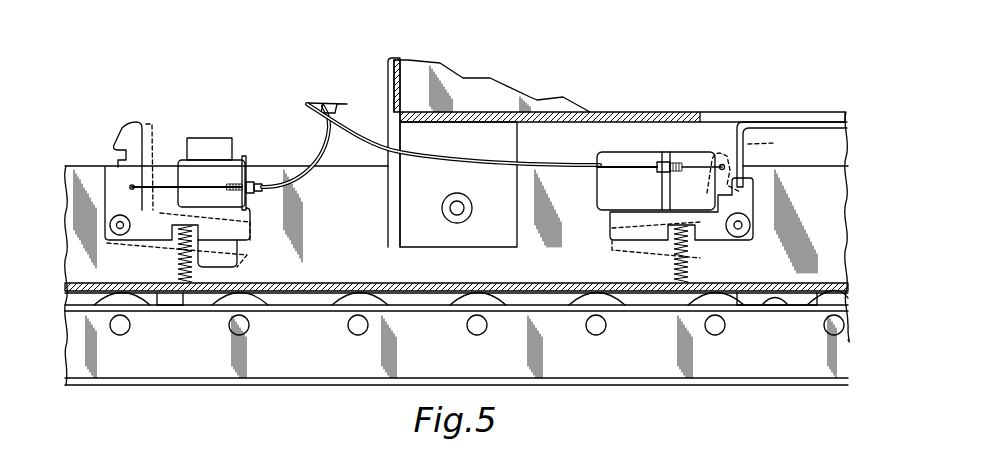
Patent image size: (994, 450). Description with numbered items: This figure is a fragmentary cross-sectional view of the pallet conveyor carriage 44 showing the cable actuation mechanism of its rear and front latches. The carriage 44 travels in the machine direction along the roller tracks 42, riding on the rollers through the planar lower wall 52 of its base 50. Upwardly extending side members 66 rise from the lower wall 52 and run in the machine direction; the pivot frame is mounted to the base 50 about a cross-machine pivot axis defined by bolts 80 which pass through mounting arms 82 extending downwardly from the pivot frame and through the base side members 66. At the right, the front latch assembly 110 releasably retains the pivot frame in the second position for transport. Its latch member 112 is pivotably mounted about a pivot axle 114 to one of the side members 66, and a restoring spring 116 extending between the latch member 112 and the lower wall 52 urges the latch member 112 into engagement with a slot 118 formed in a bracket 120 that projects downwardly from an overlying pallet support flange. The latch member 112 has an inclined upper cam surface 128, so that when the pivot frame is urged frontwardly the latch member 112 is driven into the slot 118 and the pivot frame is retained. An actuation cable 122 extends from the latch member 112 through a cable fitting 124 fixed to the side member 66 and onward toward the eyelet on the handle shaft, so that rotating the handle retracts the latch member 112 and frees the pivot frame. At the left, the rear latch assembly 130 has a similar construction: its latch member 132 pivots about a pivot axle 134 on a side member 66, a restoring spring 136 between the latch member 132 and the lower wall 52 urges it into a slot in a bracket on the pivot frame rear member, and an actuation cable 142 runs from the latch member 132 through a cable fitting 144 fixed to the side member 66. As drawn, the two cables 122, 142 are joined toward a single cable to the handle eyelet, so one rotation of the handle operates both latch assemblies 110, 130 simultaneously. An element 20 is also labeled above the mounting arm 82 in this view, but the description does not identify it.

The cover member 20 is at (497, 72).
The roller tracks 42 is at (546, 292).
The carriage 44 is at (88, 165).
The base 50 is at (372, 283).
The lower wall 52 is at (470, 283).
The side members 66 is at (255, 165).
The bolts 80 is at (468, 206).
The mounting arms 82 is at (518, 232).
The front latch assembly 110 is at (636, 139).
The latch member 112 is at (720, 180).
The pivot axle 114 is at (745, 236).
The restoring spring 116 is at (672, 264).
The slot 118 is at (781, 142).
The bracket 120 is at (736, 136).
The actuation cable 122 is at (497, 160).
The cable fitting 124 is at (660, 172).
The inclined upper cam surface 128 is at (727, 150).
The rear latch assembly 130 is at (207, 132).
The latch member 132 is at (135, 121).
The pivot axle 134 is at (112, 230).
The restoring spring 136 is at (178, 270).
The actuation cable 142 is at (325, 140).
The cable fitting 144 is at (252, 196).